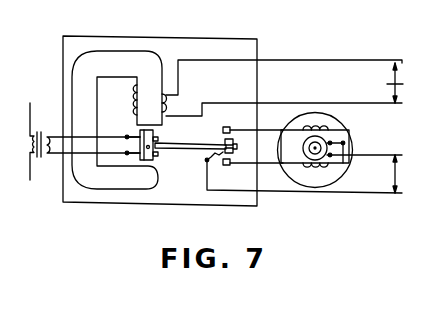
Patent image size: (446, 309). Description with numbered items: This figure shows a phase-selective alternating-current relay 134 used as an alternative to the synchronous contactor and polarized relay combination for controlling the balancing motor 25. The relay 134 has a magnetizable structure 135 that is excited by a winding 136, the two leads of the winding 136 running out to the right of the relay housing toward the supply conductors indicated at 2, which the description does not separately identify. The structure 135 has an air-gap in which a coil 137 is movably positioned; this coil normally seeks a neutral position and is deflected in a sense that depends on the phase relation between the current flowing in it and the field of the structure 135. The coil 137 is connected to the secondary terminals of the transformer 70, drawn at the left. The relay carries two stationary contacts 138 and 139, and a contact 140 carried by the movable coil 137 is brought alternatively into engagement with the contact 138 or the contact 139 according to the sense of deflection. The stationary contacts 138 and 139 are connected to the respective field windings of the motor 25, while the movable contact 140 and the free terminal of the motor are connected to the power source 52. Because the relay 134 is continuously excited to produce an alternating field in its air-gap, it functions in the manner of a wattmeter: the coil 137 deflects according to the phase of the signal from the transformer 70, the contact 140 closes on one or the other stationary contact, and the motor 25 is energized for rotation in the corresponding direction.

The phase-selective alternating-current relay 134 is at (258, 50).
The magnetizable structure 135 is at (108, 60).
The exciting winding 136 is at (165, 109).
The movable coil 137 is at (141, 132).
The stationary contact 138 is at (230, 127).
The stationary contact 139 is at (230, 165).
The movable contact 140 is at (224, 141).
The transformer 70 is at (42, 127).
The electric motor 25 is at (347, 130).
The power supply leads 2 is at (395, 83).
The alternating-current power source 52 is at (393, 174).